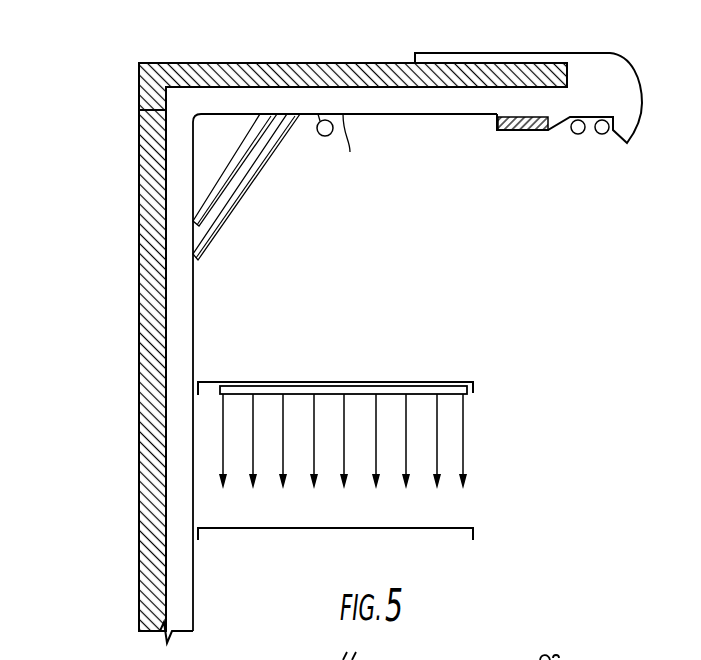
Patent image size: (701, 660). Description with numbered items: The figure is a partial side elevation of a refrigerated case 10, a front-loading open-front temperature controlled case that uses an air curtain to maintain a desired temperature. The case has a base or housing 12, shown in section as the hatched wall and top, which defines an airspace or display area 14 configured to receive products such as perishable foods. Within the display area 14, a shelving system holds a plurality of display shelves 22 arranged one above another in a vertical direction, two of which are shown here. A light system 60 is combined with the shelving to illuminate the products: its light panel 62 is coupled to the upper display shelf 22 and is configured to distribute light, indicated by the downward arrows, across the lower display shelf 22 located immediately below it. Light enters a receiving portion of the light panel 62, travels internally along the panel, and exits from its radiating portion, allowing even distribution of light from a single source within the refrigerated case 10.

The refrigerated case 10 is at (217, 56).
The housing 12 is at (139, 360).
The display area 14 is at (491, 249).
The display shelf 22 is at (213, 382).
The light system 60 is at (490, 409).
The light panel 62 is at (367, 388).